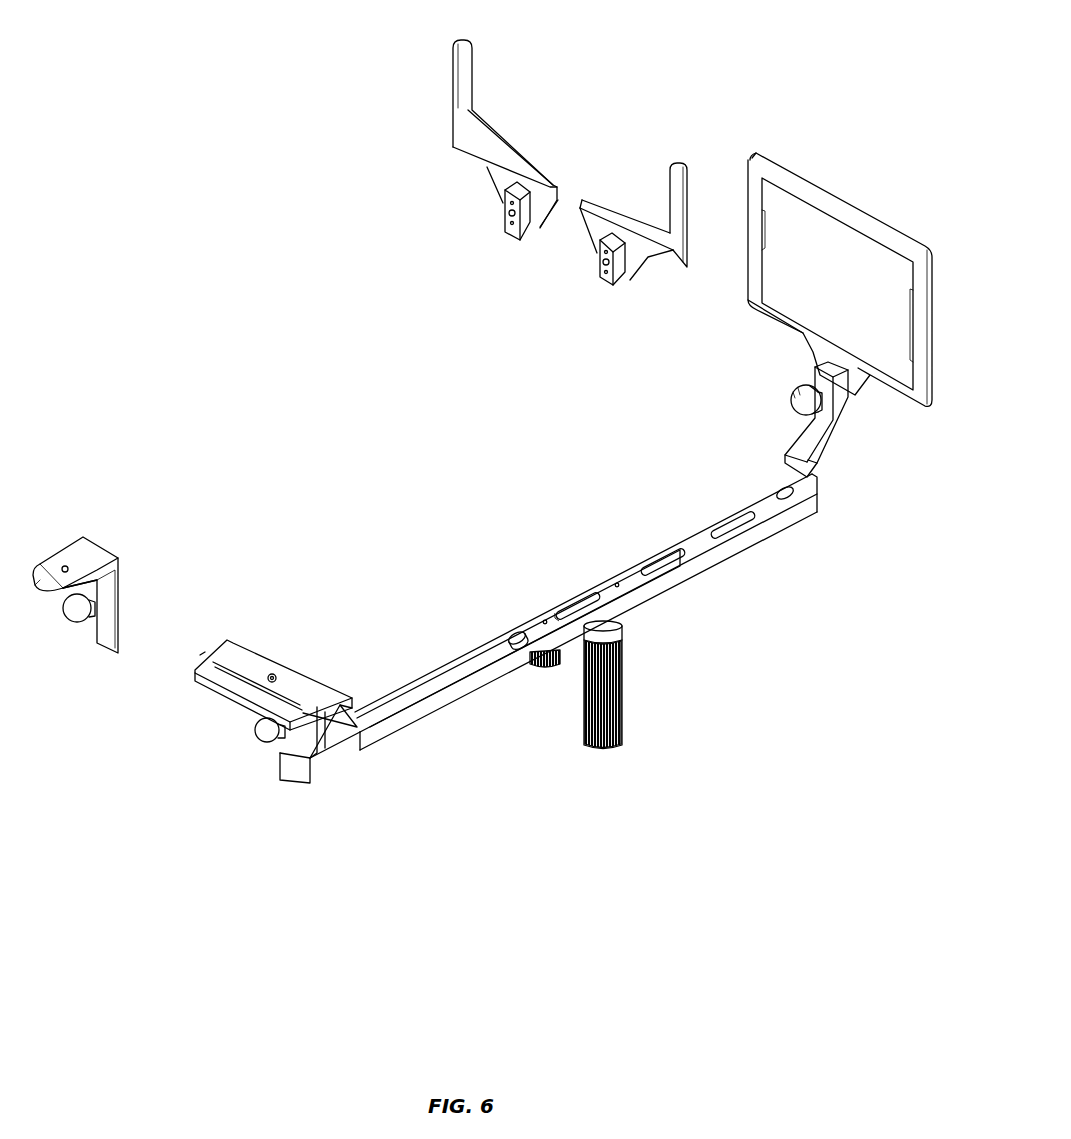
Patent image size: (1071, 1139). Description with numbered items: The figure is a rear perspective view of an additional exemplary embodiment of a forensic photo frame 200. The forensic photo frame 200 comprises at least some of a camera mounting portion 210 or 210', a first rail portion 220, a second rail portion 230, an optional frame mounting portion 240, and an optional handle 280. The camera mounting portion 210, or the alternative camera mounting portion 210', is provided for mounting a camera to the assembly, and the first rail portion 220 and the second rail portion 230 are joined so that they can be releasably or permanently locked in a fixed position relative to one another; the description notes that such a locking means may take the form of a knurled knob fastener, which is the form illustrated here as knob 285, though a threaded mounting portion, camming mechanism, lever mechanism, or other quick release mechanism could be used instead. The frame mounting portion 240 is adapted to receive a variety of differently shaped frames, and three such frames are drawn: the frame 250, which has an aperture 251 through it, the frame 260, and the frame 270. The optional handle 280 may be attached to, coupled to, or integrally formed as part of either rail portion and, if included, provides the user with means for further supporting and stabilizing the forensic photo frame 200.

The forensic photo frame 200 is at (240, 126).
The camera mounting portion 210 is at (288, 656).
The camera mounting portion 210' is at (136, 567).
The first rail portion 220 is at (349, 745).
The second rail portion 230 is at (719, 546).
The frame mounting portion 240 is at (789, 432).
The frame 250 is at (784, 158).
The aperture 251 is at (820, 236).
The frame 260 is at (480, 53).
The frame 270 is at (661, 180).
The handle 280 is at (626, 686).
The thumb screw knob 285 is at (546, 664).